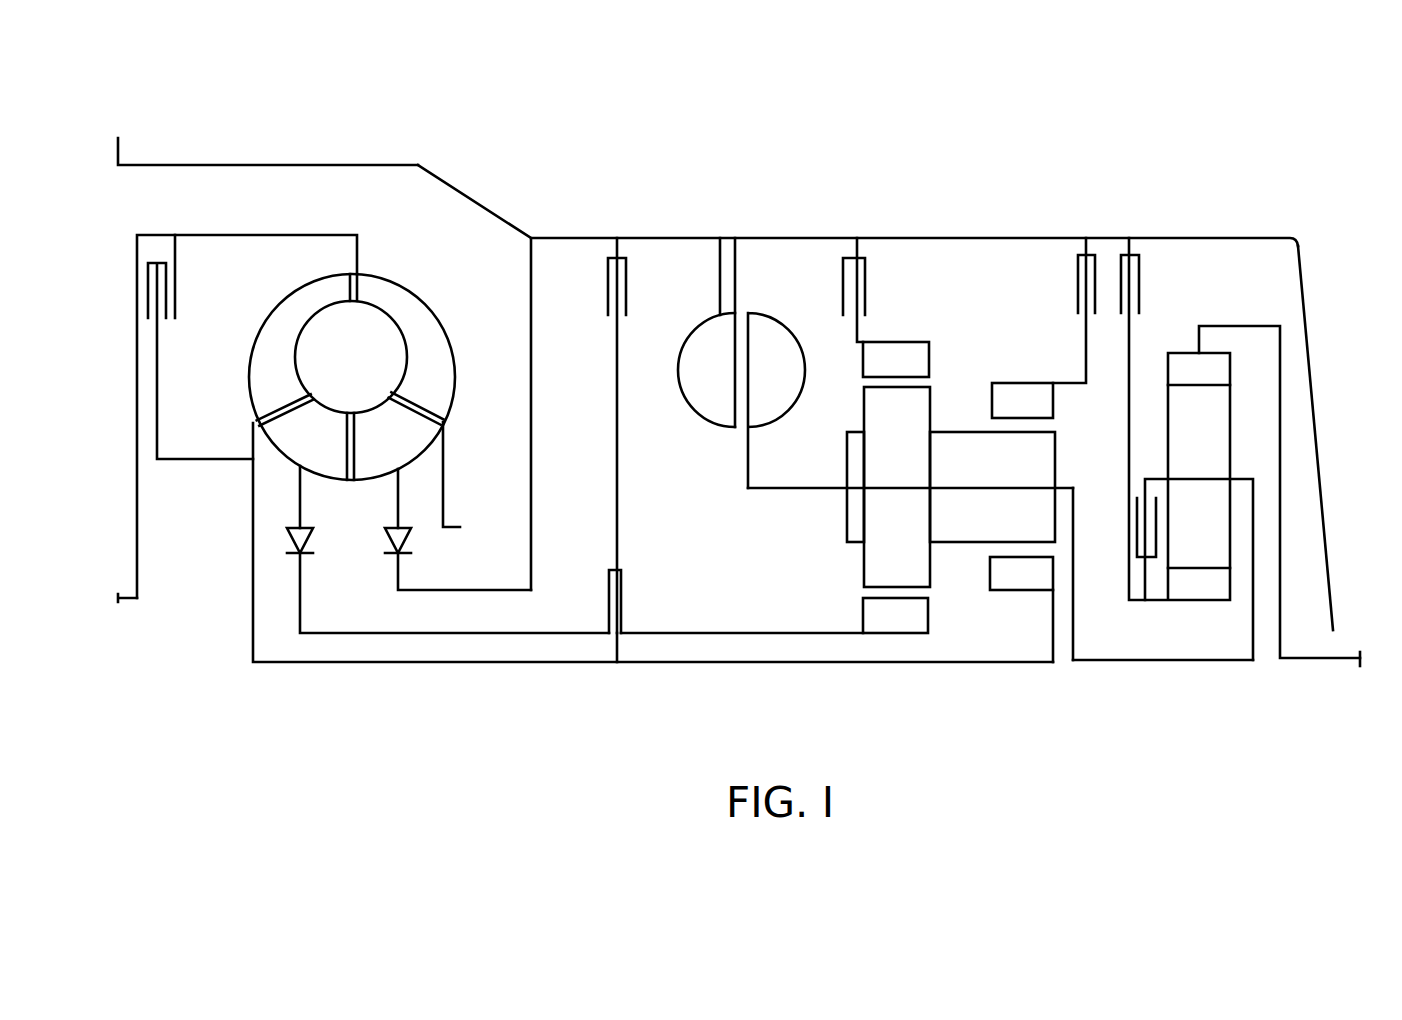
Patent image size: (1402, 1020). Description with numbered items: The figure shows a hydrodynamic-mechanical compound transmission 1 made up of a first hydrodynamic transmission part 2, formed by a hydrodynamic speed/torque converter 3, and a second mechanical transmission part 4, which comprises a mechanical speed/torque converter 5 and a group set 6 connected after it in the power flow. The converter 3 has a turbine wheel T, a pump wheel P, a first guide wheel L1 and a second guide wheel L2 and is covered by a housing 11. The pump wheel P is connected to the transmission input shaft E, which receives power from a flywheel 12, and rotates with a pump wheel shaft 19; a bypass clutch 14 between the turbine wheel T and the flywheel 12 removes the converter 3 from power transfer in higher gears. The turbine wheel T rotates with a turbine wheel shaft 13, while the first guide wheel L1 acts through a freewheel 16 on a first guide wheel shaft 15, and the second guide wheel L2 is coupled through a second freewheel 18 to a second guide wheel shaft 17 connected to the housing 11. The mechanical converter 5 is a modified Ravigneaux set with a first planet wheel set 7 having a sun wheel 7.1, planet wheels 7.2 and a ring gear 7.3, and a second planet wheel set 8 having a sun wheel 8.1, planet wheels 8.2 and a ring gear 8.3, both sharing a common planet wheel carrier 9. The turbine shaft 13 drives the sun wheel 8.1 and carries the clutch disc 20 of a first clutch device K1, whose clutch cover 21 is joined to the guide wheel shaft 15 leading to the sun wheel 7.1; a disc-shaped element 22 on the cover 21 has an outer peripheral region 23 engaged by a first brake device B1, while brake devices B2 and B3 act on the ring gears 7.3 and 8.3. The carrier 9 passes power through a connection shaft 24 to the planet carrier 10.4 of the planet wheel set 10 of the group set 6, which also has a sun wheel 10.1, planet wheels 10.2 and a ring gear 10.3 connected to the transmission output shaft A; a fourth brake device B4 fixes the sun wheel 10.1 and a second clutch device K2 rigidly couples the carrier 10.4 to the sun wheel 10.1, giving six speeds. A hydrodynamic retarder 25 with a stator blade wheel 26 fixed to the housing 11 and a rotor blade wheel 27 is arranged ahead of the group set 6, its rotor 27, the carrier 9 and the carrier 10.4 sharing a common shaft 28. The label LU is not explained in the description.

The hydrodynamic-mechanical compound transmission 1 is at (926, 199).
The first hydrodynamic transmission part 2 is at (233, 160).
The hydrodynamic speed/torque converter 3 is at (374, 268).
The second mechanical transmission part 4 is at (962, 221).
The mechanical speed/torque converter 5 is at (917, 336).
The group set 6 is at (1206, 318).
The first planet wheel set 7 is at (890, 340).
The sun wheel 7.1 is at (895, 615).
The planet wheels 7.2 is at (888, 487).
The ring gear 7.3 is at (896, 359).
The second planet wheel set 8 is at (1018, 380).
The sun wheel 8.1 is at (1021, 609).
The planet wheels 8.2 is at (992, 487).
The ring gear 8.3 is at (1022, 400).
The planet wheel carrier 9 is at (1073, 629).
The planet wheel set 10 is at (1180, 352).
The sun wheel 10.1 is at (1199, 584).
The planet wheels 10.2 is at (1193, 455).
The ring gear 10.3 is at (1199, 373).
The planet carrier (arm) 10.4 is at (1253, 640).
The housing 11 is at (478, 200).
The flywheel 12 is at (136, 254).
The turbine wheel shaft 13 is at (320, 665).
The bypass clutch 14 is at (148, 303).
The first guide wheel shaft 15 is at (418, 636).
The freewheel 16 is at (313, 533).
The second guide wheel shaft 17 is at (476, 589).
The second freewheel 18 is at (388, 529).
The pump wheel shaft 19 is at (444, 487).
The clutch disc 20 is at (618, 641).
The clutch cover 21 is at (623, 578).
The disc-shaped element 22 is at (620, 473).
The outer peripheral region 23 is at (634, 288).
The connection shaft 24 is at (1120, 662).
The hydrodynamic retarder 25 is at (751, 262).
The stator blade wheel 26 is at (698, 400).
The rotor blade wheel 27 is at (762, 325).
The common shaft 28 is at (790, 492).
The first brake device B1 is at (618, 239).
The second brake device B2 is at (857, 239).
The third brake device B3 is at (1086, 238).
The fourth brake device B4 is at (1130, 238).
The first clutch device K1 is at (626, 616).
The second clutch device K2 is at (1137, 549).
The air unit LU is at (157, 245).
The turbine wheel T is at (270, 367).
The pump wheel P is at (425, 367).
The first guide wheel L1 is at (303, 454).
The second guide wheel L2 is at (382, 454).
The transmission input shaft E is at (116, 604).
The transmission output shaft A is at (1370, 668).